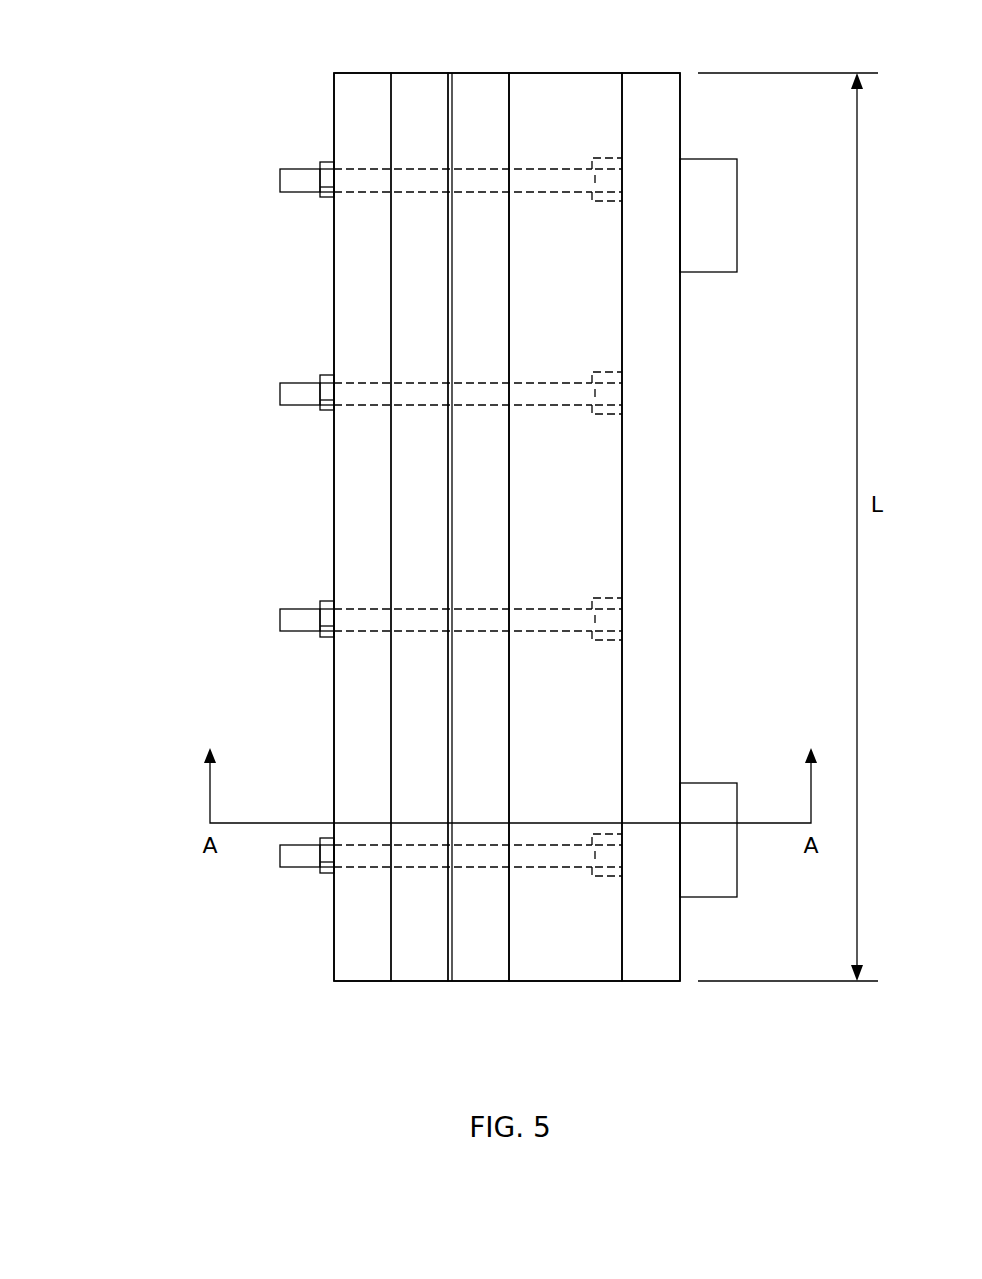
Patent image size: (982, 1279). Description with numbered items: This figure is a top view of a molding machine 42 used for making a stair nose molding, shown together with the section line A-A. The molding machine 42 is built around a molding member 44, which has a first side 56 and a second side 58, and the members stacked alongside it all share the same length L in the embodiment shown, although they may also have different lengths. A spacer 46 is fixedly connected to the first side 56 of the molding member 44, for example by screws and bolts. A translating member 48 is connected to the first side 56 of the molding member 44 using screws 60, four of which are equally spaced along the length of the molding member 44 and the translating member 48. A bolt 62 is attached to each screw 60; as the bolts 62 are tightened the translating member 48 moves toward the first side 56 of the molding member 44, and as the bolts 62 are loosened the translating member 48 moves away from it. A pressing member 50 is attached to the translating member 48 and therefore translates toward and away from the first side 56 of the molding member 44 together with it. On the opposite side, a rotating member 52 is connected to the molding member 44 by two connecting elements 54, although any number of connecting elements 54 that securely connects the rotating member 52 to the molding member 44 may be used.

The molding machine 42 is at (128, 68).
The molding member 44 is at (543, 982).
The spacer 46 is at (462, 982).
The translating member 48 is at (356, 982).
The pressing member 50 is at (403, 982).
The rotating member 52 is at (650, 982).
The connecting element 54 is at (737, 214).
The first side 56 is at (510, 541).
The second side 58 is at (622, 485).
The screw 60 is at (280, 192).
The bolt 62 is at (321, 198).